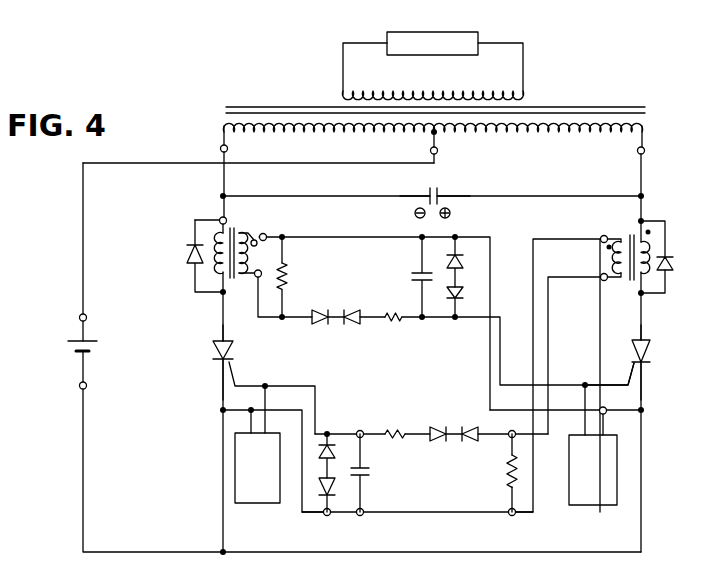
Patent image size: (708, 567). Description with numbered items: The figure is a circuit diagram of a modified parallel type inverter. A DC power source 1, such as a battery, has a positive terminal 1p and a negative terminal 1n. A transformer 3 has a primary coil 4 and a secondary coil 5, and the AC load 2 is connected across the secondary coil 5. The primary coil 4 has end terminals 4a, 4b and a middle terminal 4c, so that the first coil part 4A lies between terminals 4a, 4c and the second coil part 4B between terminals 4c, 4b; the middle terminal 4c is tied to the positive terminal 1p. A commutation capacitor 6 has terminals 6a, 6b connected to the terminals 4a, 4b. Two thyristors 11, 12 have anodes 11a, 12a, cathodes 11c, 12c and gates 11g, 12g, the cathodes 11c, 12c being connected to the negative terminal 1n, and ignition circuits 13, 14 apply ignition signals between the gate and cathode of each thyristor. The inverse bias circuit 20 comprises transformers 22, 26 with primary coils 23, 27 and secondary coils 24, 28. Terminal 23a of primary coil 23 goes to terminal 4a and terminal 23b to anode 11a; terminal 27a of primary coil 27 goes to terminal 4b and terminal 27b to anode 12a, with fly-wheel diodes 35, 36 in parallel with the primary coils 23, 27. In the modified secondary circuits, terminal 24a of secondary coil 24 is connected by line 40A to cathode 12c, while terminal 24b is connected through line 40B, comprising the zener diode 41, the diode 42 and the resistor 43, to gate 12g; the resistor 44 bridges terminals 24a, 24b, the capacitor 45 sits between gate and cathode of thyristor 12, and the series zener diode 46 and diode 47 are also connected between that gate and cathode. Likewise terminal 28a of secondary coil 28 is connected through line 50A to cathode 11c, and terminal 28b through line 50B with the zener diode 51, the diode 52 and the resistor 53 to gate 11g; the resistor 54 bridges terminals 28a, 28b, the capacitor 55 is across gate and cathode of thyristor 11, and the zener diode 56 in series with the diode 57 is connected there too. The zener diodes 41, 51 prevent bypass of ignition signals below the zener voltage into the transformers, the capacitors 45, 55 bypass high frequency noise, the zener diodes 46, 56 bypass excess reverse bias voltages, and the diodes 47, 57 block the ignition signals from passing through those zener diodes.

The DC power source 1 is at (96, 347).
The positive terminal 1p is at (87, 316).
The negative terminal 1n is at (87, 386).
The AC load 2 is at (440, 32).
The transformer 3 is at (570, 107).
The primary coil 4 is at (447, 133).
The terminal 4a is at (660, 143).
The terminal 4b is at (220, 148).
The middle terminal 4c is at (439, 150).
The first coil part 4A is at (530, 133).
The second coil part 4B is at (311, 133).
The secondary coil 5 is at (457, 92).
The commutation capacitor 6 is at (440, 188).
The terminal 6a is at (456, 201).
The terminal 6b is at (398, 202).
The thyristor 11 is at (651, 360).
The anode 11a is at (643, 334).
The cathode 11c is at (643, 390).
The gate 11g is at (628, 378).
The thyristor 12 is at (216, 352).
The anode 12a is at (220, 334).
The cathode 12c is at (222, 392).
The gate 12g is at (236, 380).
The ignition circuit 13 is at (597, 505).
The ignition circuit 14 is at (258, 503).
The inverse bias circuit 20 is at (413, 381).
The transformer 22 is at (642, 276).
The primary coil 23 is at (650, 250).
The terminal 23a is at (644, 218).
The terminal 23b is at (643, 297).
The secondary coil 24 is at (614, 262).
The terminal 24a is at (602, 236).
The terminal 24b is at (603, 281).
The transformer 26 is at (230, 269).
The primary coil 27 is at (218, 266).
The terminal 27a is at (226, 218).
The terminal 27b is at (222, 296).
The secondary coil 28 is at (251, 259).
The terminal 28a is at (266, 234).
The terminal 28b is at (256, 278).
The fly-wheel diode 35 is at (672, 265).
The fly-wheel diode 36 is at (184, 257).
The line 40A is at (436, 512).
The line 40B is at (490, 430).
The zener diode 41 is at (469, 441).
The diode 42 is at (438, 441).
The resistor 43 is at (394, 440).
The resistor 44 is at (505, 478).
The capacitor 45 is at (369, 472).
The zener diode 46 is at (332, 490).
The diode 47 is at (332, 447).
The line 50A is at (343, 237).
The line 50B is at (375, 320).
The zener diode 51 is at (316, 323).
The diode 52 is at (353, 323).
The resistor 53 is at (403, 320).
The resistor 54 is at (297, 277).
The capacitor 55 is at (410, 278).
The zener diode 56 is at (465, 266).
The diode 57 is at (465, 292).